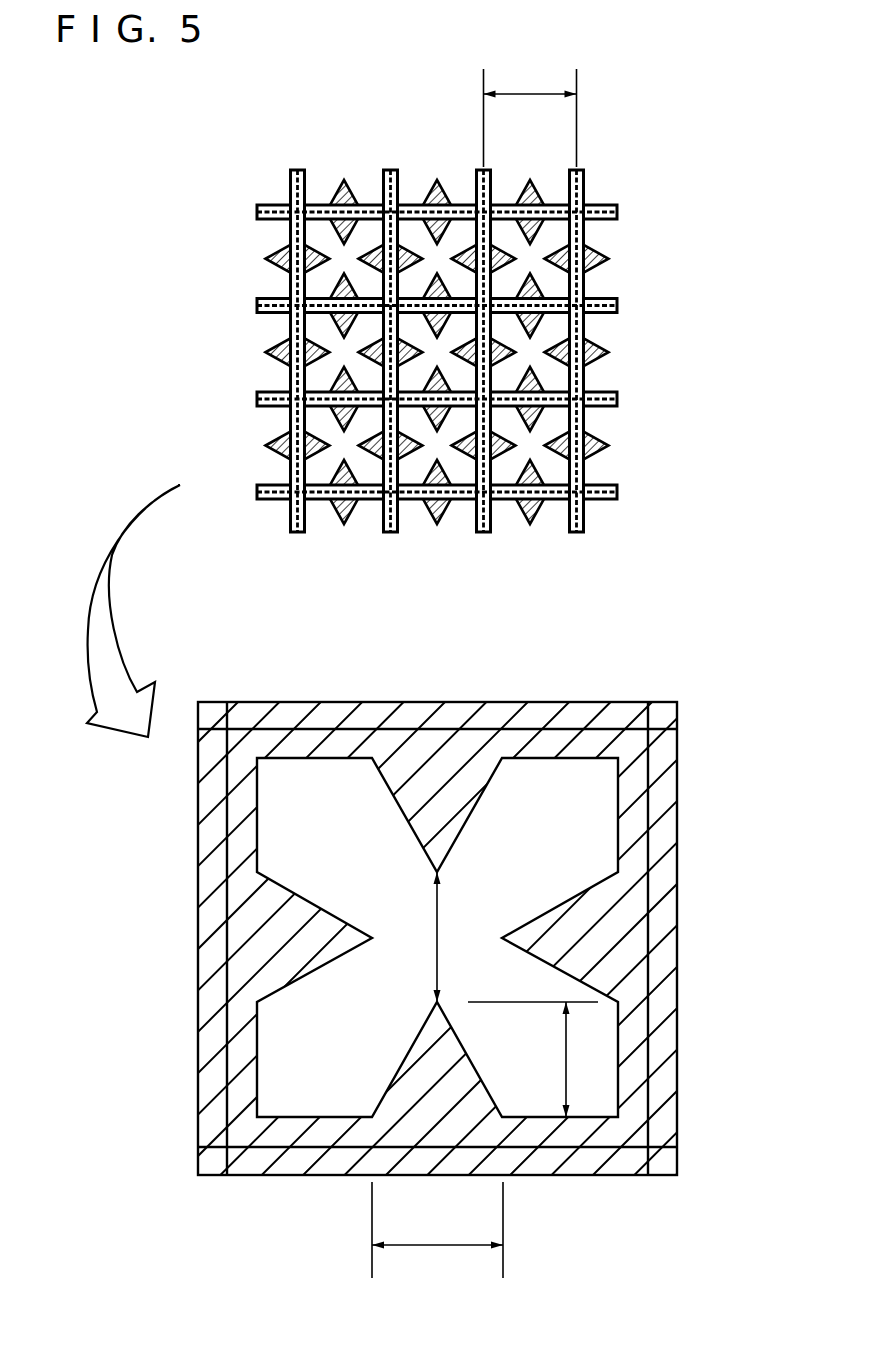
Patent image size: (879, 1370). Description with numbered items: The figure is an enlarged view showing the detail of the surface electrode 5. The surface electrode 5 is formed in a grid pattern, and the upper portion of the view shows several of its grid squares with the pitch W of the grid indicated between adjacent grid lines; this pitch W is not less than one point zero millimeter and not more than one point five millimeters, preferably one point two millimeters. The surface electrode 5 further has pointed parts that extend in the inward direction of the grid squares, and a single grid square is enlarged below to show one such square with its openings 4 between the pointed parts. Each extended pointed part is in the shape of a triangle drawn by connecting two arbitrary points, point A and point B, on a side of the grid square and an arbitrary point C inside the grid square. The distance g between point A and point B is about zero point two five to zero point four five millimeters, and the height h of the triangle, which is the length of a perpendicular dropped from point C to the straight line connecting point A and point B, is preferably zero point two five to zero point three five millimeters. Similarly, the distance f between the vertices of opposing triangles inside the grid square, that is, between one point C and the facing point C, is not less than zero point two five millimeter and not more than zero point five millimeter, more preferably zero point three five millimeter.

The opening 4 is at (562, 285).
The surface electrode 5 is at (598, 205).
The pitch of the grid W is at (530, 110).
The distance between the vertices f is at (447, 937).
The height of the triangle h is at (533, 1059).
The distance between the point A and the point B g is at (437, 1232).
The point A is at (352, 1097).
The point B is at (522, 1097).
The point C is at (417, 998).